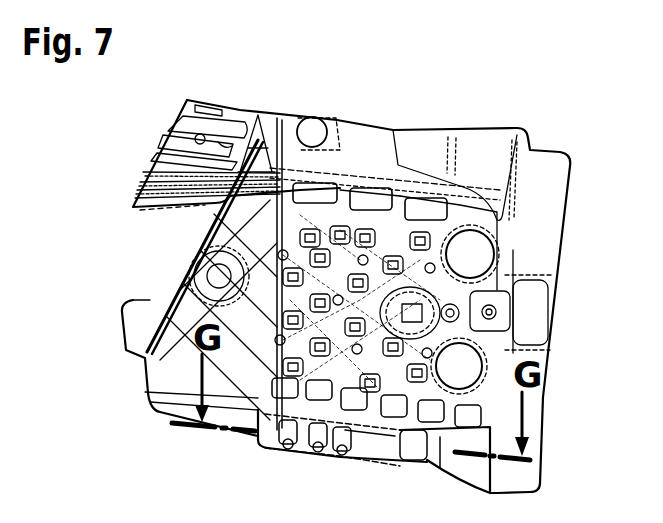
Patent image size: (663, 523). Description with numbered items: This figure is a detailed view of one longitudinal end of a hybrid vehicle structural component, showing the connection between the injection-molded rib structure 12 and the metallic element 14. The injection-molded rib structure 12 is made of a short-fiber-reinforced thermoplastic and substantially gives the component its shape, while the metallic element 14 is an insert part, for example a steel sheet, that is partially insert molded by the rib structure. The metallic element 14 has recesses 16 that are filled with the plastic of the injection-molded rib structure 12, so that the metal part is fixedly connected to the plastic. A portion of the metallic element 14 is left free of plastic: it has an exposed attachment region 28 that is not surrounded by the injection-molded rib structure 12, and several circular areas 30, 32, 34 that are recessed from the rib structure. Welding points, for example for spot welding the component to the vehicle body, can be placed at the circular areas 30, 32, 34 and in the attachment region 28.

The injection-molded rib structure 12 is at (185, 345).
The metallic element 14 is at (433, 150).
The recess 16 is at (364, 237).
The attachment region 28 is at (523, 308).
The circular area 30 is at (467, 358).
The circular area 32 is at (473, 257).
The circular area 34 is at (312, 126).